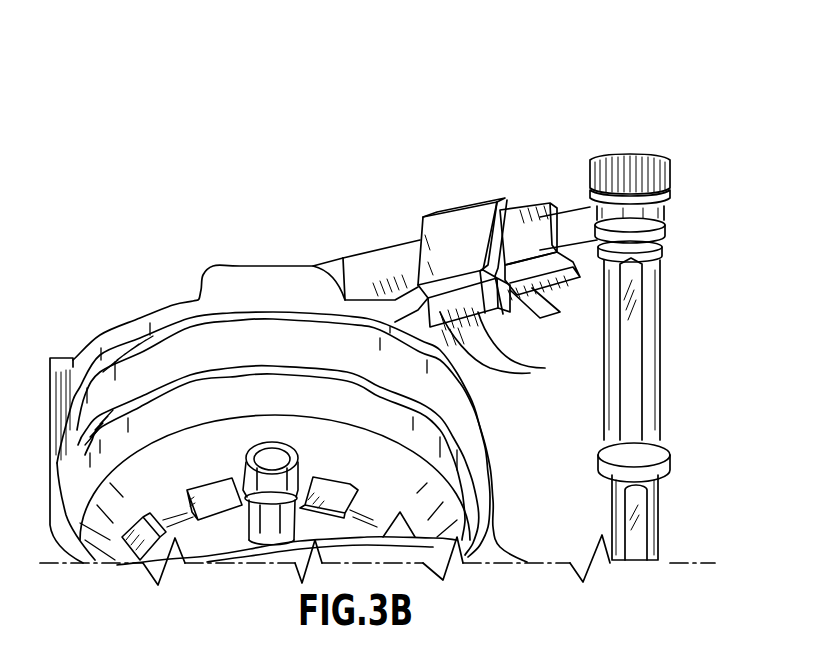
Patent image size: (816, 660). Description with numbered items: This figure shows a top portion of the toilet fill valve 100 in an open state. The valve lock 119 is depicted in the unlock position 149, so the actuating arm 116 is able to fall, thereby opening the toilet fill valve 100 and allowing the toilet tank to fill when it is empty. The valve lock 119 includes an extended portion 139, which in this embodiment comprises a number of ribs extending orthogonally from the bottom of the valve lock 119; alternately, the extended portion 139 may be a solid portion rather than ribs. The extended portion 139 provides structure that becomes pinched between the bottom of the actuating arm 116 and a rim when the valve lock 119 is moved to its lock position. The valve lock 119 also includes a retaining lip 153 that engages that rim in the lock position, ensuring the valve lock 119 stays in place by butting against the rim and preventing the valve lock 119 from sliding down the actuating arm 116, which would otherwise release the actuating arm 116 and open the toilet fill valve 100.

The toilet fill valve 100 is at (647, 91).
The unlock position 149 is at (505, 163).
The actuating arm 116 is at (375, 273).
The valve lock 119 is at (458, 224).
The extended portion 139 is at (513, 343).
The retaining lip 153 is at (490, 453).